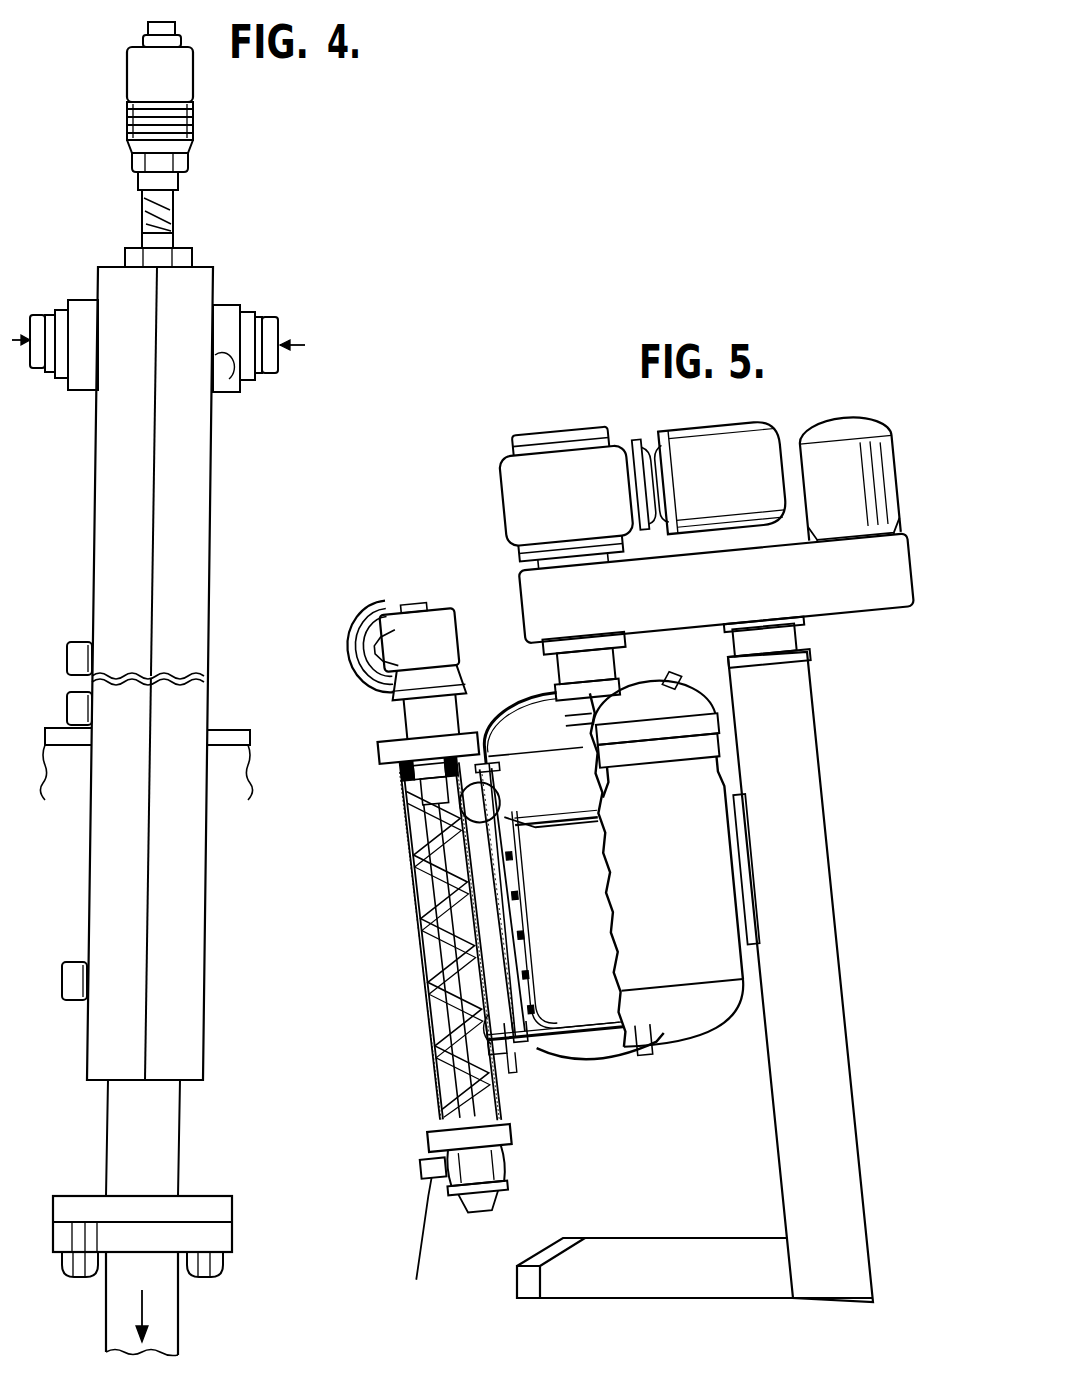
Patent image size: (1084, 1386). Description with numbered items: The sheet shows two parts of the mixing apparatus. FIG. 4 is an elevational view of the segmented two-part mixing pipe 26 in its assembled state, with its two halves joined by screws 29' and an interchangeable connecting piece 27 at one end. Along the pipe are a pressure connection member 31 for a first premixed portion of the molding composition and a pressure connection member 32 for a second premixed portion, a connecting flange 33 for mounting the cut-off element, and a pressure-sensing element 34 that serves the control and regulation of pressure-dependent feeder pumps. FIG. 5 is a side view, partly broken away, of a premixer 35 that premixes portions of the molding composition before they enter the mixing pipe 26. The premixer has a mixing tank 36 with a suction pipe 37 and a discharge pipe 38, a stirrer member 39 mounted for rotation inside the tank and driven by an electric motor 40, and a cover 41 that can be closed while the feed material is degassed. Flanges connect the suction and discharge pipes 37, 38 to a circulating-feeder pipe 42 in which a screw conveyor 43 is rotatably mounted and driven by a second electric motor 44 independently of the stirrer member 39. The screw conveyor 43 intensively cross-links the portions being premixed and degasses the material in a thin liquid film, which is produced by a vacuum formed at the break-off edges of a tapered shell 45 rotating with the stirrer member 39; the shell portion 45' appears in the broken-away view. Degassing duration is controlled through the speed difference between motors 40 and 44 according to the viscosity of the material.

In FIG. 4, the mixing pipe 26 is at (93, 507).
In FIG. 4, the connecting piece 27 is at (167, 1310).
In FIG. 4, the screws 29' is at (62, 803).
In FIG. 4, the pressure connection member 31 is at (40, 318).
In FIG. 4, the pressure connection member 32 is at (262, 318).
In FIG. 4, the connecting flange 33 is at (222, 1235).
In FIG. 4, the pressure-sensing element 34 is at (168, 205).
In FIG. 5, the premixer 35 is at (513, 692).
In FIG. 5, the mixing tank 36 is at (540, 1040).
In FIG. 5, the suction pipe 37 is at (517, 1027).
In FIG. 5, the discharge pipe 38 is at (458, 800).
In FIG. 5, the stirrer member 39 is at (517, 863).
In FIG. 5, the electric motor 40 is at (682, 443).
In FIG. 5, the cover 41 is at (679, 699).
In FIG. 5, the circulating-feeder pipe 42 is at (430, 1053).
In FIG. 5, the screw conveyor 43 is at (440, 890).
In FIG. 5, the electric motor 44 is at (366, 652).
In FIG. 5, the tapered shell 45 is at (536, 879).
In FIG. 5, the plate 45' is at (446, 946).